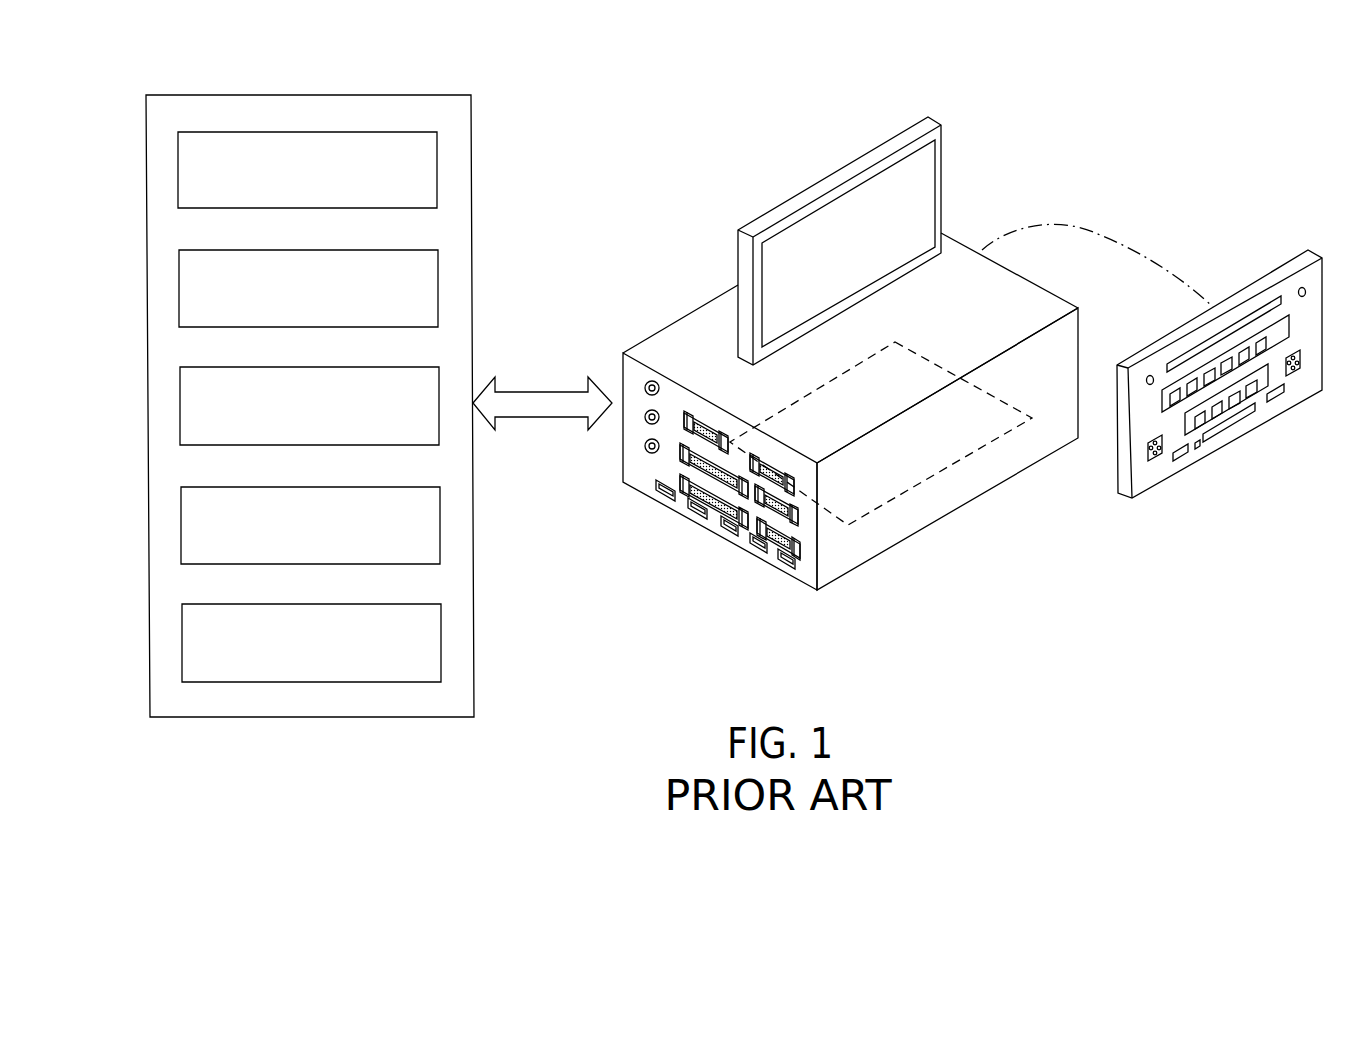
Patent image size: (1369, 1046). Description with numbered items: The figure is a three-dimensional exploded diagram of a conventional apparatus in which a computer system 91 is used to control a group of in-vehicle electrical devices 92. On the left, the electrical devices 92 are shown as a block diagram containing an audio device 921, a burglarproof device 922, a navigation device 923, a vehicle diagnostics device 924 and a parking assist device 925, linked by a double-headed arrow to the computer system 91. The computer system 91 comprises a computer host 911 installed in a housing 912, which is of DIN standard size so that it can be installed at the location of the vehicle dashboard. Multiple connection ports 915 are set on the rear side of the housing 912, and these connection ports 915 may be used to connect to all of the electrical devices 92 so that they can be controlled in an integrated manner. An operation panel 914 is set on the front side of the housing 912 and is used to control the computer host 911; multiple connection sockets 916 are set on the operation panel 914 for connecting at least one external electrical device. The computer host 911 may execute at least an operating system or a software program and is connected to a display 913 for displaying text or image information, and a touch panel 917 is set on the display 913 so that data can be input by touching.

The computer system 91 is at (988, 120).
The computer host 911 is at (963, 438).
The housing 912 is at (698, 325).
The display 913 is at (847, 172).
The operation panel 914 is at (1258, 288).
The connection ports 915 is at (727, 530).
The connection sockets 916 is at (1185, 460).
The touch panel 917 is at (918, 198).
The electrical devices 92 is at (386, 406).
The audio device 921 is at (425, 165).
The burglarproof device 922 is at (427, 284).
The navigation device 923 is at (427, 425).
The vehicle diagnostics device 924 is at (433, 532).
The parking assist device 925 is at (435, 648).